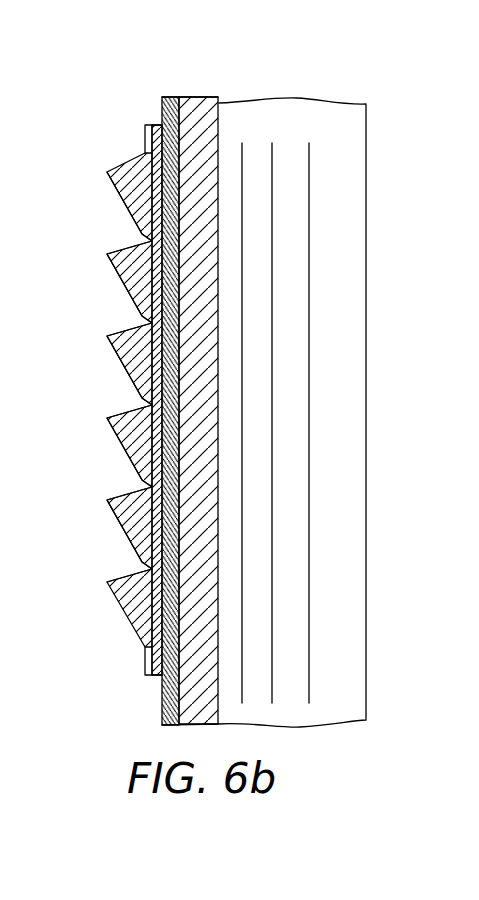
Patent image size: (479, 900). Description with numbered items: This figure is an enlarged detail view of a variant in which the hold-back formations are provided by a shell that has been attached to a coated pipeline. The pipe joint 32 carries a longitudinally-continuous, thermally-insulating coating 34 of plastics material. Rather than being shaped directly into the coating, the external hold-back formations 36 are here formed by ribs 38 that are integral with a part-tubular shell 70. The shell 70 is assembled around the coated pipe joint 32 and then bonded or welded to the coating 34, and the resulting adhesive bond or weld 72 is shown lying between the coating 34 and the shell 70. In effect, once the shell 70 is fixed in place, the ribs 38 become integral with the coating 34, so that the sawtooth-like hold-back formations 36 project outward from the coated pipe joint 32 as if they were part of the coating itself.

The pipe joint 32 is at (303, 84).
The coating 34 is at (162, 102).
The hold-back formations 36 is at (101, 445).
The ribs 38 is at (120, 515).
The part-tubular shell 70 is at (145, 128).
The adhesive bond or weld 72 is at (147, 662).